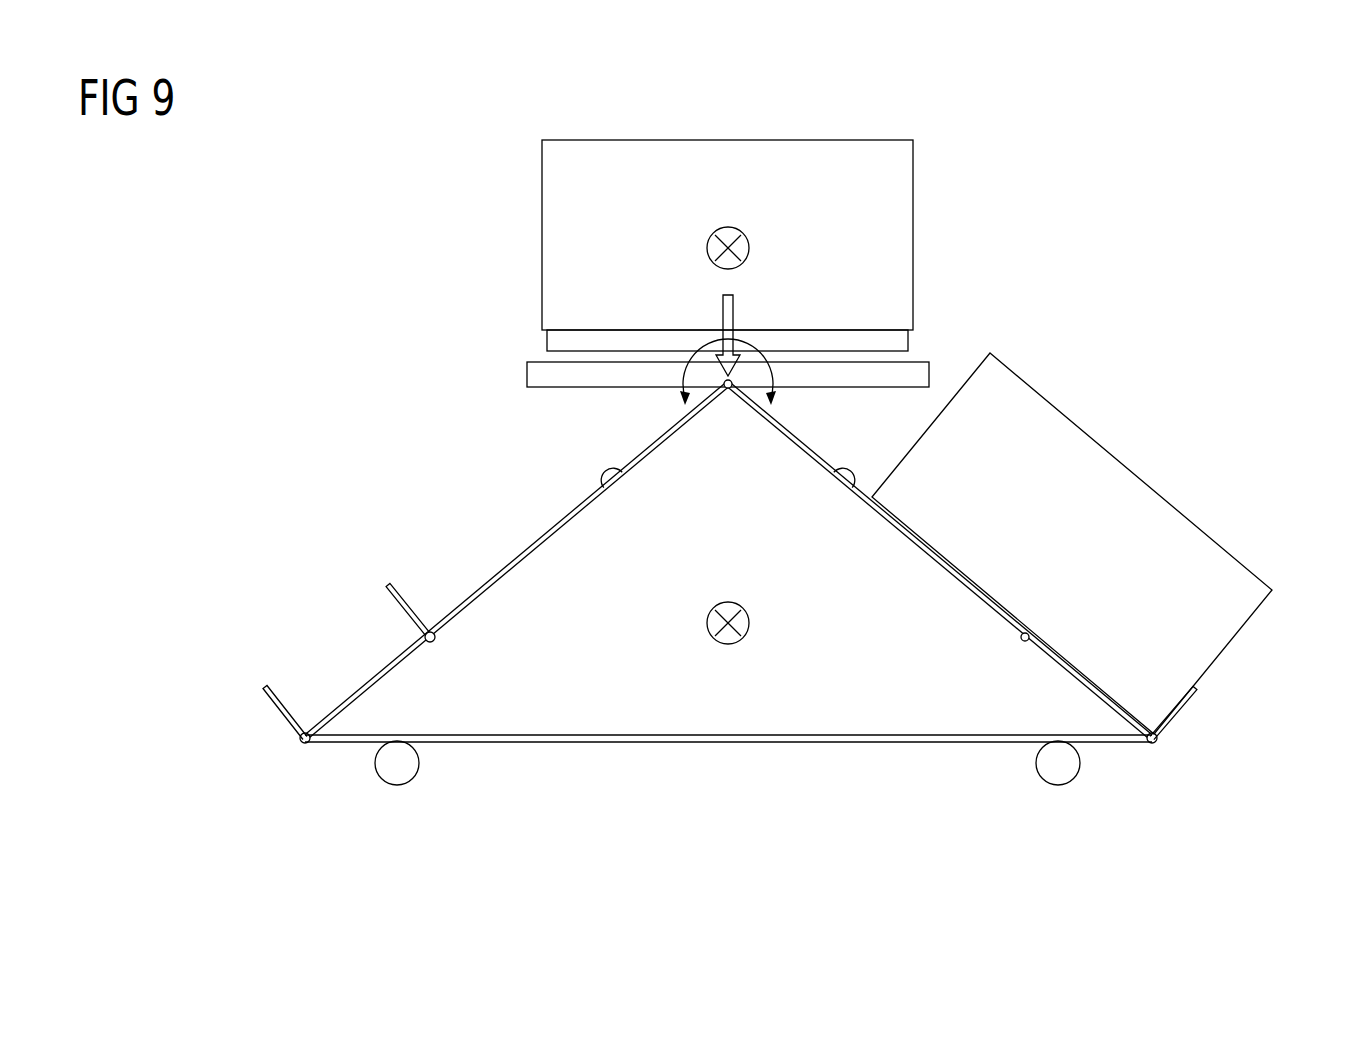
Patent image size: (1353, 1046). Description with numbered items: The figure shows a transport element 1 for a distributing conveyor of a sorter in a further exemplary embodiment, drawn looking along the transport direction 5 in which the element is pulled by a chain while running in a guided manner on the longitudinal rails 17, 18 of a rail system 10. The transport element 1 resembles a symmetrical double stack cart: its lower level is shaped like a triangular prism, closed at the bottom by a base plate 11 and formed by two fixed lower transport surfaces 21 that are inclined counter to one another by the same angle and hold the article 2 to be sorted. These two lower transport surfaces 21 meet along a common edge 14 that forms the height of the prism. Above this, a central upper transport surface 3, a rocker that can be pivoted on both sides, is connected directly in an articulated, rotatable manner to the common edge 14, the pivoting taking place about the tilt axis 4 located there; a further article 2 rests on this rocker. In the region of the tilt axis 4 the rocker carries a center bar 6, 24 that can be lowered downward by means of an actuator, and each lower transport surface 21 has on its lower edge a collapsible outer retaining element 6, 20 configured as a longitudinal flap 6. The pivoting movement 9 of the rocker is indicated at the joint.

The transport element 1 is at (186, 245).
The article 2 is at (899, 194).
The upper transport surface 3 is at (540, 374).
The tilt axis 4 is at (730, 426).
The common edge 14 is at (730, 392).
The transport direction 5 is at (752, 620).
The flap 6 is at (727, 664).
The outer retaining element 20 is at (277, 713).
The center bar 24 is at (398, 600).
The rotation direction 9 is at (745, 350).
The rail system 10 is at (727, 798).
The longitudinal rail 17 is at (397, 776).
The longitudinal rail 18 is at (1058, 776).
The base plate 11 is at (703, 733).
The lower transport surface 21 is at (628, 476).